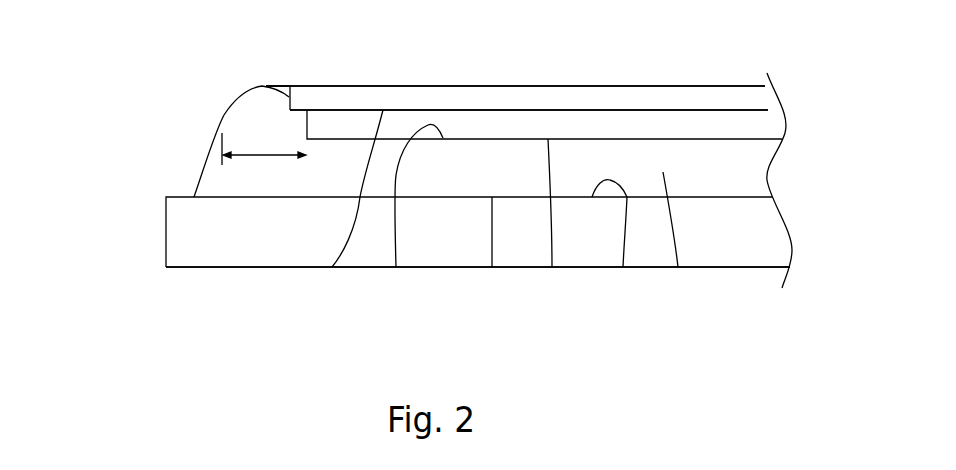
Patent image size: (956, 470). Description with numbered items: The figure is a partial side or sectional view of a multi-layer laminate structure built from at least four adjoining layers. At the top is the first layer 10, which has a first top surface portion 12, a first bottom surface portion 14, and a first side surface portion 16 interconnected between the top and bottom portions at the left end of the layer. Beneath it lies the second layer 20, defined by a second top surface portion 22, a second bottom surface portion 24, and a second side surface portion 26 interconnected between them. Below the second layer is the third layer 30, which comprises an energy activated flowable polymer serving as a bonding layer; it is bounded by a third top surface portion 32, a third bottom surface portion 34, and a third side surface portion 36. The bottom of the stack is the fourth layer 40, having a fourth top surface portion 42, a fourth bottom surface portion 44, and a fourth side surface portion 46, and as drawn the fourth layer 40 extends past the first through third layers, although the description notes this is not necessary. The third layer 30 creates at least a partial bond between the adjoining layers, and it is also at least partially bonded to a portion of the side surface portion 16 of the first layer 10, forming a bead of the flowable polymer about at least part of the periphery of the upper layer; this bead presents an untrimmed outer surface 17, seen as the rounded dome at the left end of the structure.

The first layer 10 is at (588, 98).
The first top surface portion 12 is at (448, 86).
The first bottom surface portion 14 is at (523, 110).
The first side surface portion 16 is at (264, 85).
The untrimmed outer surface 17 is at (235, 107).
The second layer 20 is at (658, 125).
The second top surface portion 22 is at (332, 267).
The second bottom surface portion 24 is at (396, 267).
The second side surface portion 26 is at (309, 155).
The third layer 30 is at (678, 267).
The third top surface portion 32 is at (552, 267).
The third bottom surface portion 34 is at (623, 267).
The third side surface portion 36 is at (212, 150).
The fourth layer 40 is at (728, 238).
The fourth top surface portion 42 is at (492, 267).
The fourth bottom surface portion 44 is at (423, 267).
The fourth side surface portion 46 is at (165, 227).